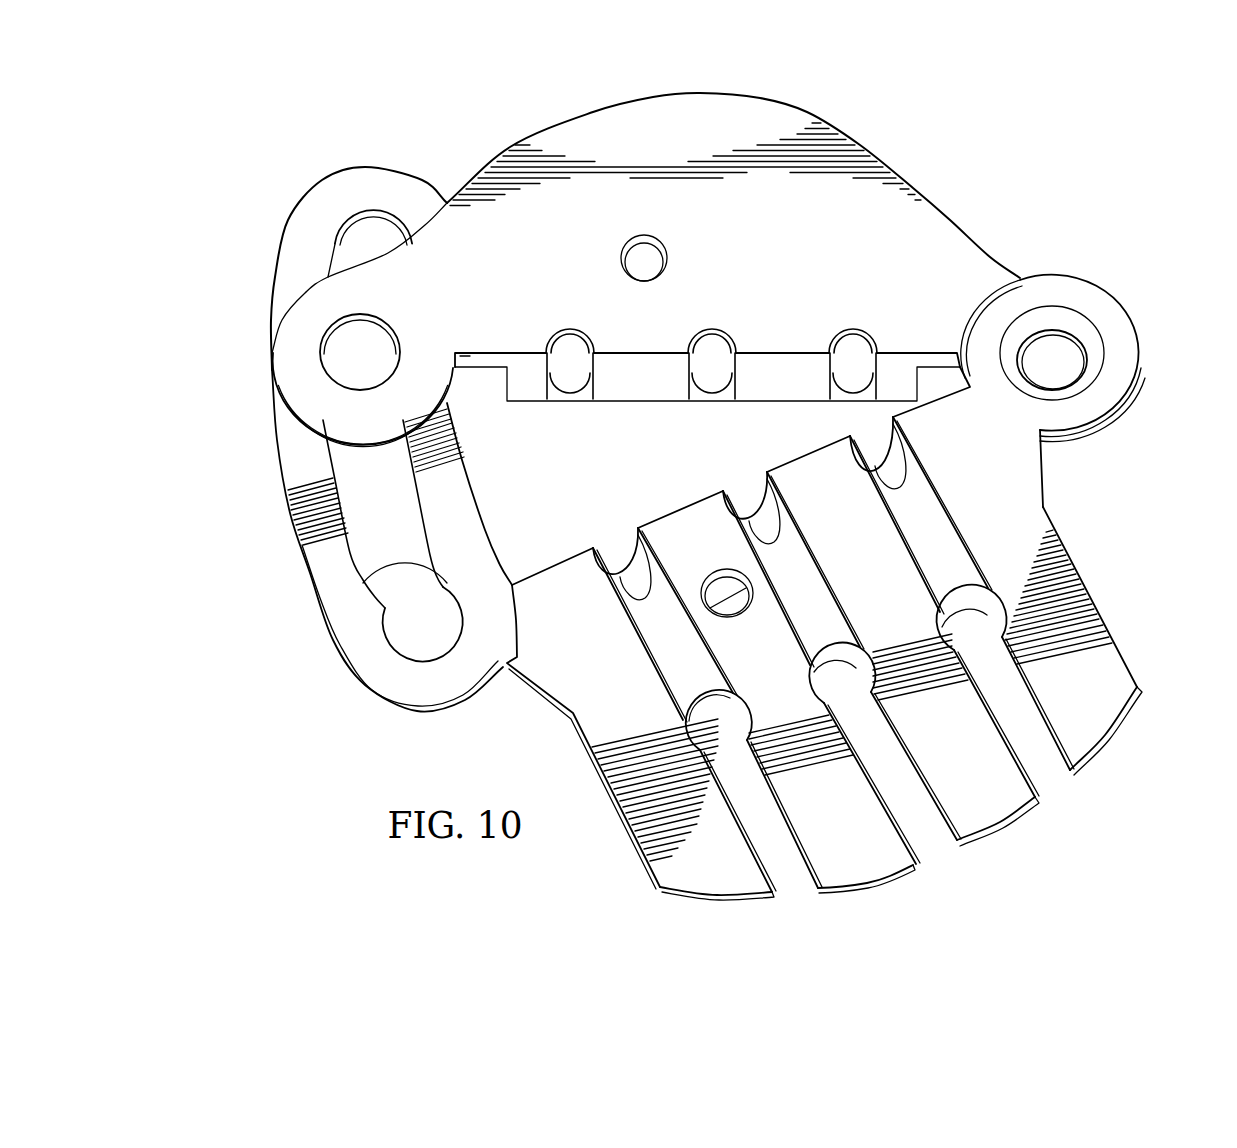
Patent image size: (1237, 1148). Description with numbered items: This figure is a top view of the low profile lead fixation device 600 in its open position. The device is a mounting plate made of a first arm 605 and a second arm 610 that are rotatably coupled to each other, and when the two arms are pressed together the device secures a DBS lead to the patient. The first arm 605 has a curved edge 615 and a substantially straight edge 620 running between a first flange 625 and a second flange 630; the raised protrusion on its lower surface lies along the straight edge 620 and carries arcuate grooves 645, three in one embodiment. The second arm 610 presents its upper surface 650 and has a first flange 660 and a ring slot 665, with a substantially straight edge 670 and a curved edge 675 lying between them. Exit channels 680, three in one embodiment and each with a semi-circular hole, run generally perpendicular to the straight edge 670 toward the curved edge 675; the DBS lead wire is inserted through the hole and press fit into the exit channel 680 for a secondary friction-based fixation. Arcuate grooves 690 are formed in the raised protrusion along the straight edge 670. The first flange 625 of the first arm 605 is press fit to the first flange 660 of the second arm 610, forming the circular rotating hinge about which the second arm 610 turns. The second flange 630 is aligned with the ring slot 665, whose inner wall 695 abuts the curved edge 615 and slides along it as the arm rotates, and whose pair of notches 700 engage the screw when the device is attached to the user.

The low profile lead fixation device 600 is at (1046, 116).
The first arm 605 is at (812, 106).
The second arm 610 is at (1135, 622).
The curved edge 615 is at (578, 108).
The substantially straight edge 620 is at (628, 392).
The first flange 625 is at (1078, 278).
The second flange 630 is at (292, 411).
The arcuate groove 645 is at (712, 383).
The upper surface 650 is at (1045, 476).
The first flange 660 is at (1087, 344).
The ring slot 665 is at (333, 258).
The substantially straight edge 670 is at (545, 565).
The curved edge 675 is at (865, 888).
The exit channel 680 is at (786, 860).
The arcuate groove 690 is at (622, 560).
The inner wall 695 is at (468, 487).
The notch 700 is at (360, 585).